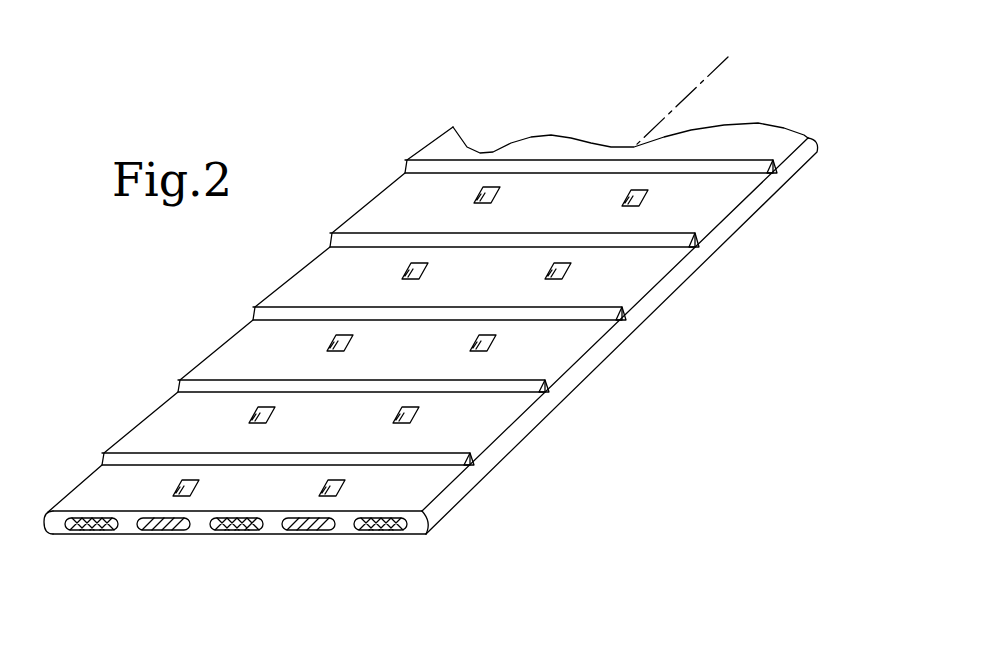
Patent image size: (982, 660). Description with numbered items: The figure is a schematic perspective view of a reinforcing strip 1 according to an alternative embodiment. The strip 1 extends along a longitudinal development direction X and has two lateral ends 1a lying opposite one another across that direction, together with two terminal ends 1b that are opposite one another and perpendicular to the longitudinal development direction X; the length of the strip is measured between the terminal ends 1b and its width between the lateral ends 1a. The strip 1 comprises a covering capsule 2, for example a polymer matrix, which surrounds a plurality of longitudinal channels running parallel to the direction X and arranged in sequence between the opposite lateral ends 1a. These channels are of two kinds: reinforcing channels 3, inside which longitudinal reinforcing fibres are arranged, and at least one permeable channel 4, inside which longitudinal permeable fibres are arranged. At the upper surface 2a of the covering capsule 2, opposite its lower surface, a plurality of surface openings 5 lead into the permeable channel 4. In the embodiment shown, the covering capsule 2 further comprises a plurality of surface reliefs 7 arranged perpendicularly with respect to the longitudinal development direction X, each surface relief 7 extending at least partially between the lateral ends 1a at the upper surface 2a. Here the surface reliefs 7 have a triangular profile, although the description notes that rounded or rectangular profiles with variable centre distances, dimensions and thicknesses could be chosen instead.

The reinforcing strip 1 is at (358, 120).
The lateral ends 1a is at (581, 370).
The terminal ends 1b is at (198, 525).
The covering capsule 2 is at (492, 418).
The upper surface 2a is at (420, 488).
The reinforcing channels 3 is at (90, 535).
The permeable channel 4 is at (163, 535).
The surface openings 5 is at (328, 487).
The surface reliefs 7 is at (123, 463).
The longitudinal development direction X is at (704, 77).